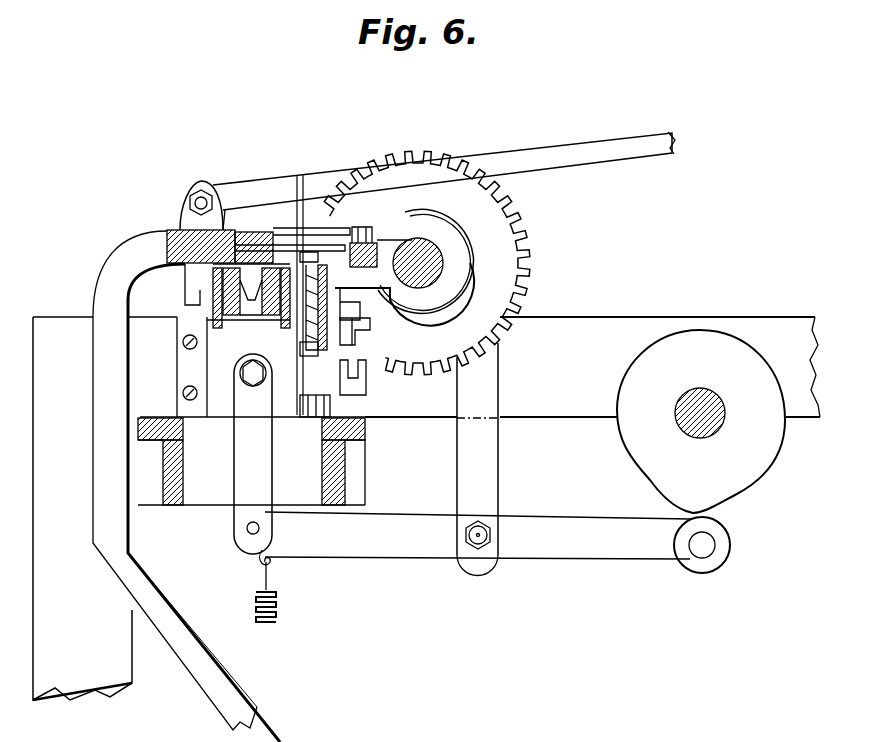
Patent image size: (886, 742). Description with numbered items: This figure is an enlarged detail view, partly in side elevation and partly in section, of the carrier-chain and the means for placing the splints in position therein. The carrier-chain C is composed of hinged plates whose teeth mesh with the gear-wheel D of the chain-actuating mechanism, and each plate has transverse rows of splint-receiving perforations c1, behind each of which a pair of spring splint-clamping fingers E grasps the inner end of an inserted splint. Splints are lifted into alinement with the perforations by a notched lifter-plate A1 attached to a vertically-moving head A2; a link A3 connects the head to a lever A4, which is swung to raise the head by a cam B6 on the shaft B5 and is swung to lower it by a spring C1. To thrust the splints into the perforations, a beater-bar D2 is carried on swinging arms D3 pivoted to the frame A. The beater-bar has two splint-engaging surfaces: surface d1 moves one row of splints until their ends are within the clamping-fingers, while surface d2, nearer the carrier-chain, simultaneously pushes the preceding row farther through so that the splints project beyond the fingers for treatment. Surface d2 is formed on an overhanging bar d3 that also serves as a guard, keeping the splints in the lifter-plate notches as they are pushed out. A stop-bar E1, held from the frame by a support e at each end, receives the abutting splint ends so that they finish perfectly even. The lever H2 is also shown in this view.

The frame A is at (426, 508).
The lifter-plate A1 is at (272, 318).
The vertically-moving head A2 is at (248, 314).
The link A3 is at (253, 454).
The lever A4 is at (477, 459).
The shaft B5 is at (726, 432).
The cam B6 is at (688, 372).
The carrier-chain C is at (322, 352).
The spring C1 is at (280, 602).
The splint-receiving perforation c1 is at (300, 356).
The gear-wheel D is at (427, 263).
The beater-bar D2 is at (172, 232).
The swinging arm D3 is at (103, 376).
The splint-engaging surface d1 is at (190, 270).
The splint-engaging surface d2 is at (258, 243).
The bar d3 is at (236, 230).
The spring splint-clamping finger E is at (356, 335).
The stop-bar E1 is at (377, 240).
The support e is at (404, 294).
The lever H2 is at (288, 192).